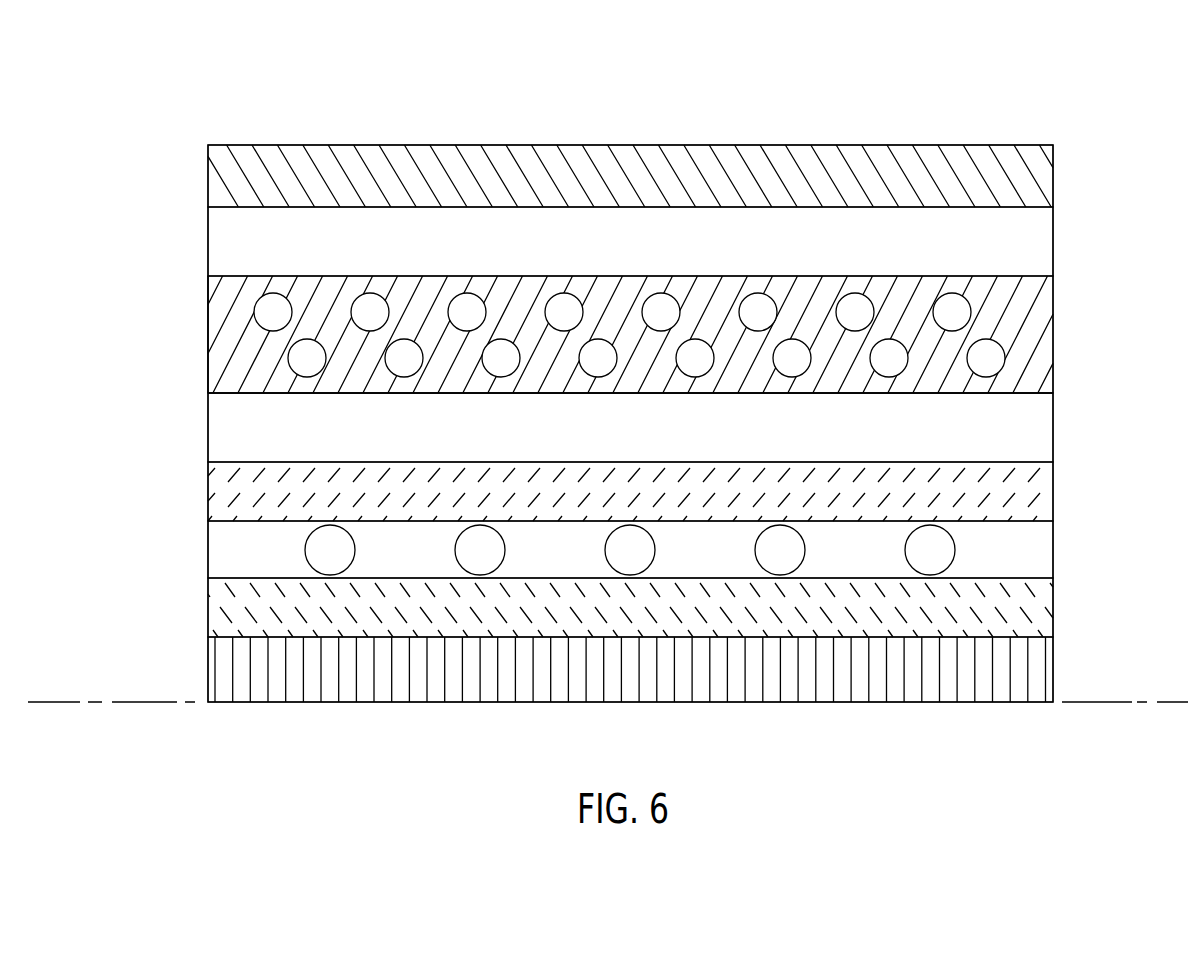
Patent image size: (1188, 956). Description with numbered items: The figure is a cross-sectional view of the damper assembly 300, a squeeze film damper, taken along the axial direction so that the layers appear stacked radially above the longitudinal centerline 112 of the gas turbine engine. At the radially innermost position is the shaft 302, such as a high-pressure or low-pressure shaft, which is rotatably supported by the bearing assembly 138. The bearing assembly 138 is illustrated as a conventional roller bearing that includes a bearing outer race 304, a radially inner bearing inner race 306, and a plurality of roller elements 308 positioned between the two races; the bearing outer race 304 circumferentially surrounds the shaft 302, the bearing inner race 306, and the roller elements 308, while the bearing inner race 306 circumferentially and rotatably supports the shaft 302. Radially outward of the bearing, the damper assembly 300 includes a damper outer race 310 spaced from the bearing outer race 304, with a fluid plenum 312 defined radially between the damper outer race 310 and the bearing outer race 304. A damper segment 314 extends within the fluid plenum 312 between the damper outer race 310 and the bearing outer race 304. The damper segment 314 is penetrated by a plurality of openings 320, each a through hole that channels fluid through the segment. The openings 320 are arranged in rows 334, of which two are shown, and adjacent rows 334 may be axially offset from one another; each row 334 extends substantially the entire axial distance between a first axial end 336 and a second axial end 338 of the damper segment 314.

The damper assembly 300 is at (140, 90).
The damper outer race 310 is at (1028, 173).
The fluid plenum 312 is at (1033, 243).
The damper segment 314 is at (1027, 343).
The opening 320 is at (968, 302).
The row of openings 334 is at (247, 313).
The first axial end 336 is at (208, 365).
The second axial end 338 is at (1053, 380).
The bearing assembly 138 is at (697, 547).
The bearing outer race 304 is at (1027, 498).
The roller elements 308 is at (955, 550).
The bearing inner race 306 is at (664, 607).
The shaft 302 is at (1027, 672).
The longitudinal centerline 112 is at (178, 700).